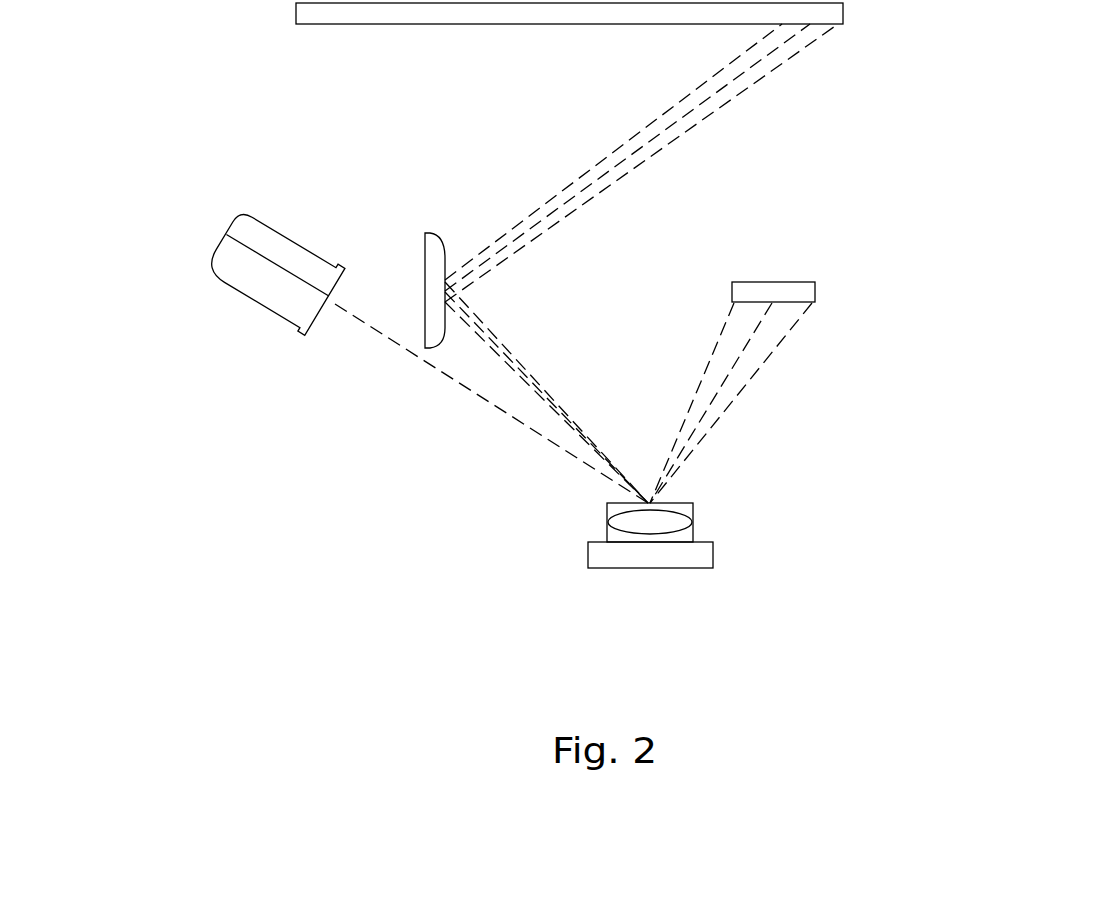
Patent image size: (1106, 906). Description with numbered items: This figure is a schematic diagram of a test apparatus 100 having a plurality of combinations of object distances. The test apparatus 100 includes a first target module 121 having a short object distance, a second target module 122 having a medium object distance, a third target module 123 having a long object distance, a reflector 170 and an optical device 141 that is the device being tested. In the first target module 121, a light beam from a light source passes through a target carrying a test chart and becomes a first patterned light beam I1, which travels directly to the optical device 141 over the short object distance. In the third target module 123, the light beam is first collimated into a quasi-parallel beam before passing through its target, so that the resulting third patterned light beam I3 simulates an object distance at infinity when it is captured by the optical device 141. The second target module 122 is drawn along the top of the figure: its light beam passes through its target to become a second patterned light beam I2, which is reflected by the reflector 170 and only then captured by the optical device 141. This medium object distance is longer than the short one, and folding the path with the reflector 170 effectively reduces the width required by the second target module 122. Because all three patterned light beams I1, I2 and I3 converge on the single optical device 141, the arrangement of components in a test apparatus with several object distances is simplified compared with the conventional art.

The test apparatus 100 is at (1081, 68).
The first target module 121 is at (803, 293).
The second target module 122 is at (649, 14).
The third target module 123 is at (255, 228).
The optical device 141 is at (658, 557).
The reflector 170 is at (430, 334).
The first patterned light beam I1 is at (731, 403).
The second patterned light beam I2 is at (641, 263).
The third patterned light beam I3 is at (491, 403).